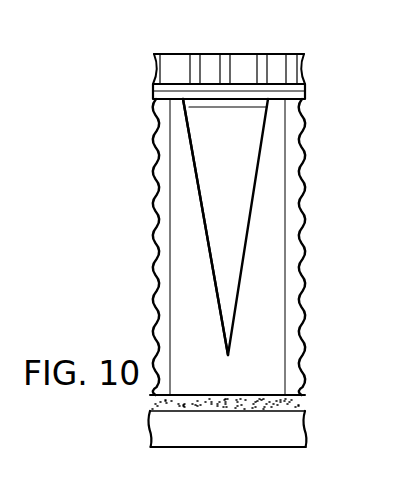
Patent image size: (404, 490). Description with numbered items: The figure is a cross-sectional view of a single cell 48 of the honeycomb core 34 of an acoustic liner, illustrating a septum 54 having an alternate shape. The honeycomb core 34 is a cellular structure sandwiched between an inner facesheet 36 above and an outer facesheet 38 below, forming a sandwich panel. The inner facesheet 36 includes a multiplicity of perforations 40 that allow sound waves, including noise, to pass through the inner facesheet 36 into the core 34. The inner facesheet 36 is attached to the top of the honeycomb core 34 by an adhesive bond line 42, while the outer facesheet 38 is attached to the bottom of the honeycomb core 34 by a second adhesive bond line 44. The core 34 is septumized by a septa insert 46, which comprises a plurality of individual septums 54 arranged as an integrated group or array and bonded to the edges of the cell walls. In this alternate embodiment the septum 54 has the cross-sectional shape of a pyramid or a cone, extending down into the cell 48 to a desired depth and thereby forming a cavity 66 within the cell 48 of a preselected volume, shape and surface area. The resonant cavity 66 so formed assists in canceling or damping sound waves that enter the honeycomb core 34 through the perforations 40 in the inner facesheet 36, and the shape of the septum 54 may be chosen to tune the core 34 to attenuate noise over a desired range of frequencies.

The honeycomb core 34 is at (321, 177).
The inner facesheet 36 is at (278, 55).
The outer facesheet 38 is at (290, 432).
The perforations 40 is at (243, 67).
The adhesive bond line 42 is at (171, 81).
The adhesive bond line 44 is at (247, 395).
The septa insert 46 is at (162, 116).
The cell 48 is at (276, 257).
The septum 54 is at (217, 293).
The cavity 66 is at (228, 198).